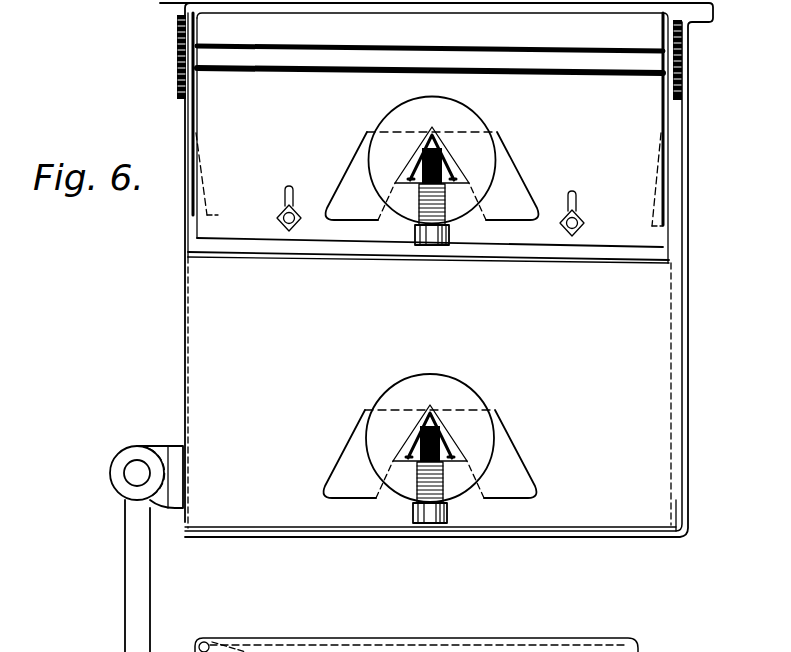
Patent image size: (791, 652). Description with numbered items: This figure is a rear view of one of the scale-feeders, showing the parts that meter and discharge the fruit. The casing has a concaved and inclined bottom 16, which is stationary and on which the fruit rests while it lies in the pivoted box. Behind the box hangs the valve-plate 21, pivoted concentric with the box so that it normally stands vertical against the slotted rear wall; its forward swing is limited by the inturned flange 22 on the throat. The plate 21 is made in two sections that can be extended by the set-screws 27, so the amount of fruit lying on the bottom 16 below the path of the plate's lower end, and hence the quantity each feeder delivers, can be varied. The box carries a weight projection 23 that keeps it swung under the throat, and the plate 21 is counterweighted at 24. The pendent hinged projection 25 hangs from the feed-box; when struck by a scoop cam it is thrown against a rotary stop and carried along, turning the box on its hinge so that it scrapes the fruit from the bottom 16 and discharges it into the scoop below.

The concaved and inclined bottom 16 is at (258, 535).
The plate 21 is at (430, 84).
The inturned flange 22 is at (650, 216).
The weight projection 23 is at (392, 386).
The counterweight 24 is at (394, 112).
The pendent hinged projection 25 is at (125, 568).
The set-screws 27 is at (301, 222).